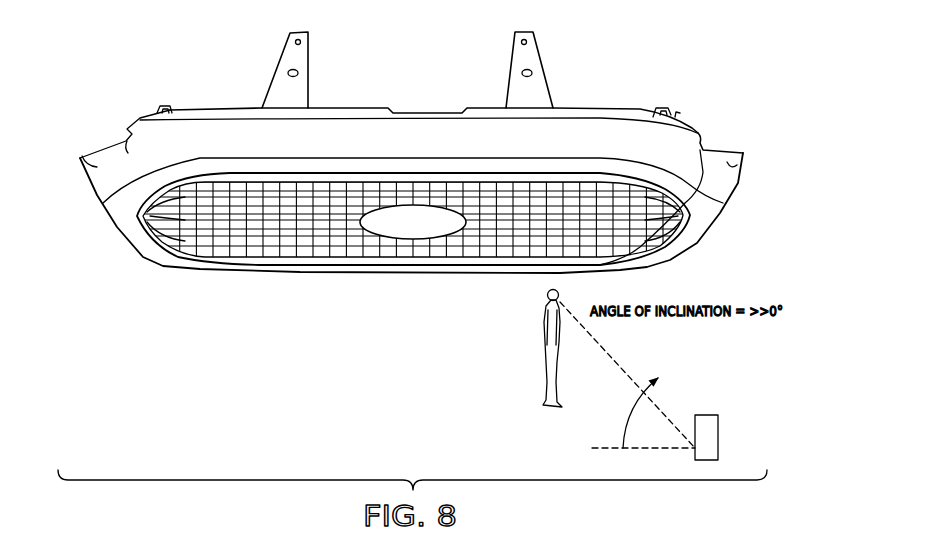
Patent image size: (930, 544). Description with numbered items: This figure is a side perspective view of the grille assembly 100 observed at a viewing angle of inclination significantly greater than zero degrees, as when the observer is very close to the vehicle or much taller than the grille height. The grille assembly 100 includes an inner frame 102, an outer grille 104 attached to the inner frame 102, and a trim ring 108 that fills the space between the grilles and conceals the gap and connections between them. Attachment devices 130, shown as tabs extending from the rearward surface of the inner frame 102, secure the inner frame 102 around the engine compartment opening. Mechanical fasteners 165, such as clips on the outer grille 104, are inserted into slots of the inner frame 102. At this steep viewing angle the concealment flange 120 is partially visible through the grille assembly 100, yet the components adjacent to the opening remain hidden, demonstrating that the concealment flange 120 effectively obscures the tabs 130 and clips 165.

The grille assembly 100 is at (697, 98).
The inner frame 102 is at (344, 108).
The outer grille 104 is at (415, 133).
The trim ring 108 is at (675, 200).
The concealment flange 120 is at (222, 197).
The attachment devices 130 is at (290, 55).
The mechanical fasteners 165 is at (168, 106).